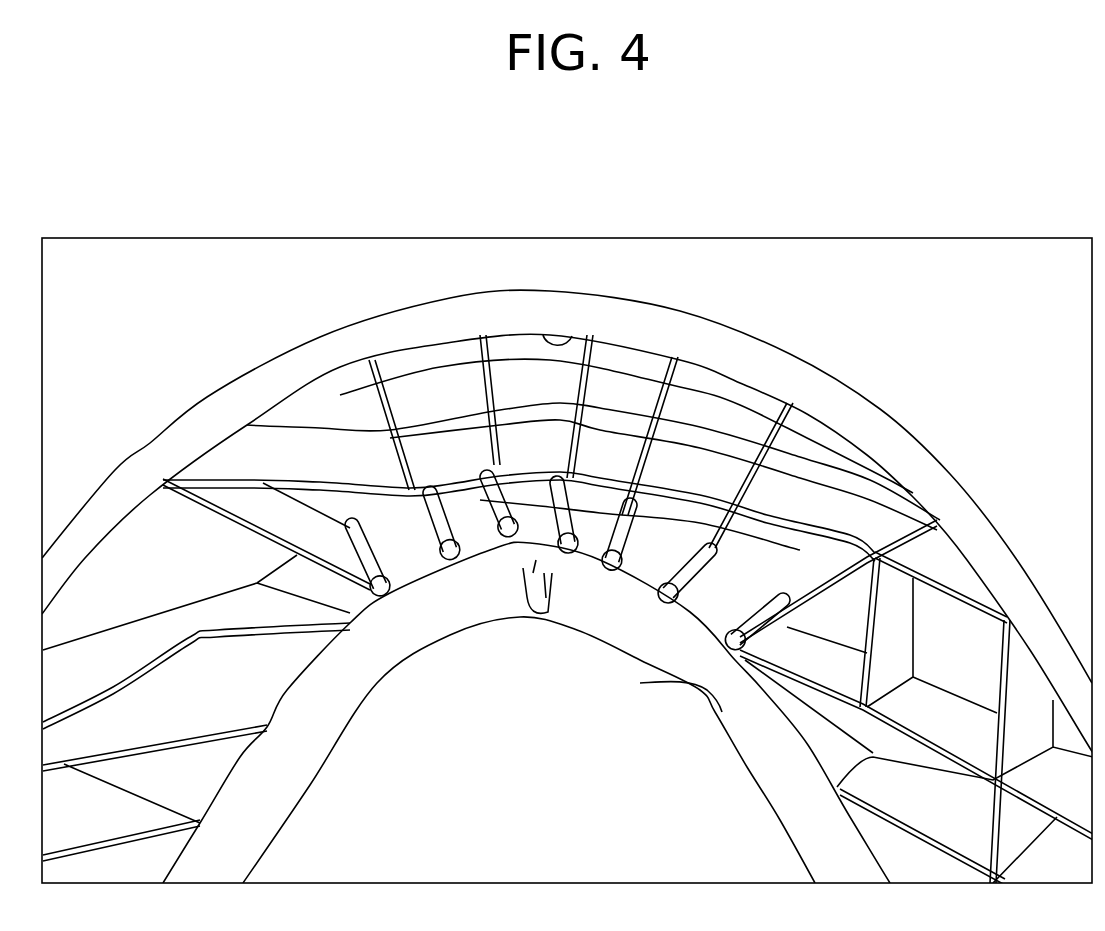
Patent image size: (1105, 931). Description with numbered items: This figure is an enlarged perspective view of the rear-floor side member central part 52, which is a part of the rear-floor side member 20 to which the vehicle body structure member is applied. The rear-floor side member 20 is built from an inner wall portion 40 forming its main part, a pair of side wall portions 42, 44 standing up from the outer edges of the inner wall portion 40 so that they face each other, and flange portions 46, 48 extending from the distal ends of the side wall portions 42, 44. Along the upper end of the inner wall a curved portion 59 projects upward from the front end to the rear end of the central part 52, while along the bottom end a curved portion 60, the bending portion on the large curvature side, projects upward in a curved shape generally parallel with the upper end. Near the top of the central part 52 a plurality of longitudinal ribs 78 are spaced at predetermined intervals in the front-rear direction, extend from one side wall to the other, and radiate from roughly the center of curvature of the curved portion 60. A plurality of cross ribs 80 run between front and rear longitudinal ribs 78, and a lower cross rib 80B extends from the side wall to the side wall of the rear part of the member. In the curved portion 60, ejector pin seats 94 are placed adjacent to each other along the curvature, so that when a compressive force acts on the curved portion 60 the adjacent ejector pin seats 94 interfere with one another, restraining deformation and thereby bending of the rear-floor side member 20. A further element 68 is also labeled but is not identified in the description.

The rear-floor side member 20 is at (965, 302).
The inner wall portion 40 is at (707, 445).
The side wall portion 42 is at (575, 338).
The side wall portion 44 is at (260, 667).
The flange portion 46 is at (341, 351).
The flange portion 48 is at (367, 667).
The rear-floor side member central part 52 is at (925, 390).
The curved portion 59 is at (653, 345).
The curved portion 60 is at (720, 712).
The lateral struts 68 is at (157, 617).
The longitudinal ribs 78 is at (567, 443).
The cross ribs 80 is at (833, 520).
The cross rib 80B is at (933, 720).
The ejector pin seats 94 is at (395, 600).